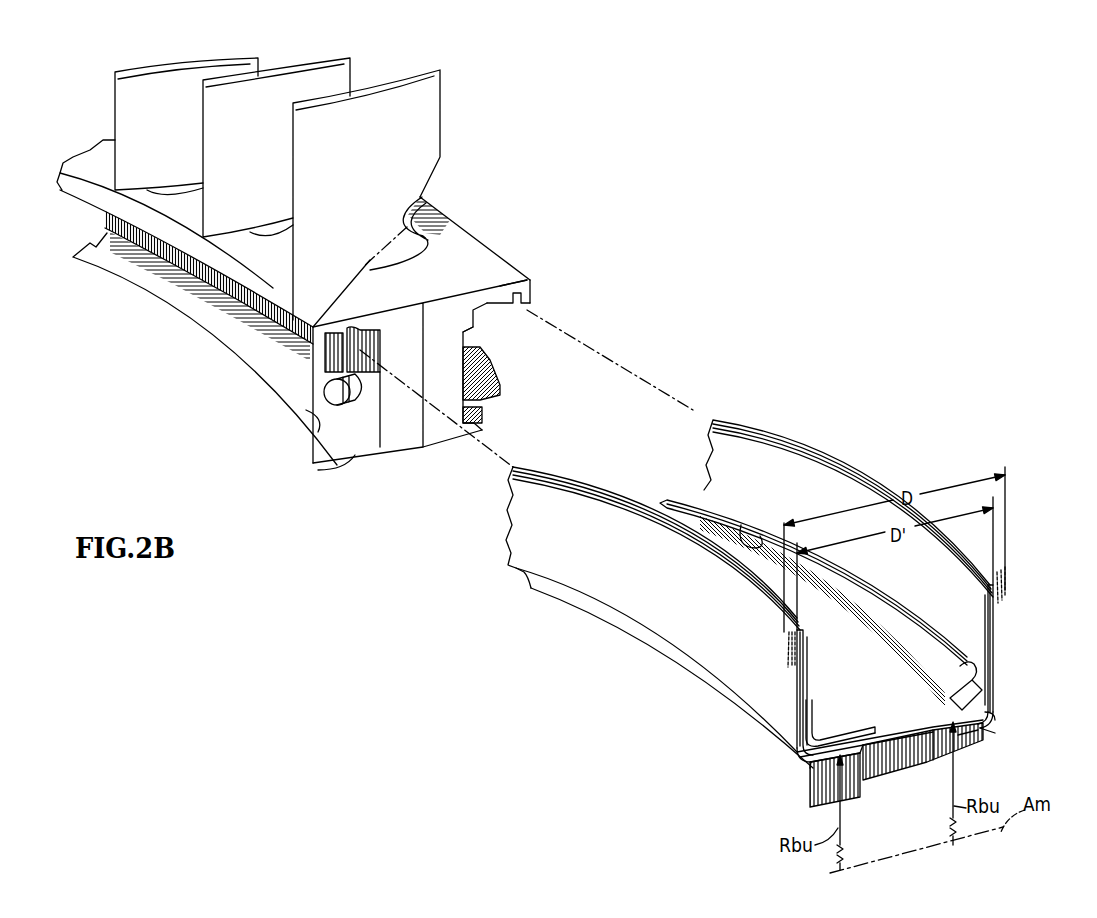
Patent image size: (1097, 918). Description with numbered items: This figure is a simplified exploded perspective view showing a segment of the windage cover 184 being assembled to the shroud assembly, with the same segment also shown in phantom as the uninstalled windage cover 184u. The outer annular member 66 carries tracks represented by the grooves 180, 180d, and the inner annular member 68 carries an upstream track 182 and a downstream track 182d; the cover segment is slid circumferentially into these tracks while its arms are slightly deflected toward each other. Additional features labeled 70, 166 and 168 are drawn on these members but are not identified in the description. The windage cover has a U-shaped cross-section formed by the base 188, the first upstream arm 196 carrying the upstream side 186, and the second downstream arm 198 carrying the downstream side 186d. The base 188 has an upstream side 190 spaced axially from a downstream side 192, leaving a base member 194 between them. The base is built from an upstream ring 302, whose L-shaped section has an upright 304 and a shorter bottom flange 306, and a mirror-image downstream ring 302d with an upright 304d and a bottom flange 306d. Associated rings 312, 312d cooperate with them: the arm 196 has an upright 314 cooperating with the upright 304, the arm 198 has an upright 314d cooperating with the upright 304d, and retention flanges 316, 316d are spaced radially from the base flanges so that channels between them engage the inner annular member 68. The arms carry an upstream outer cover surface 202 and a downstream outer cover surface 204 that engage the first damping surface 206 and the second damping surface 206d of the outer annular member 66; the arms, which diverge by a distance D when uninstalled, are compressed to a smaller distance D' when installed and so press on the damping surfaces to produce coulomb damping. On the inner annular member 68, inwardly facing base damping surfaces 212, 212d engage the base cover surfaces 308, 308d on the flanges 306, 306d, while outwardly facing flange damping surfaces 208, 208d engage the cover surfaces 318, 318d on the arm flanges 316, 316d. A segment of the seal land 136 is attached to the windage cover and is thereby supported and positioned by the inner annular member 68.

The outer annular member 66 is at (100, 157).
The platform lower surface 70 is at (97, 195).
The inner annular member 68 is at (207, 333).
The first damping surface 206 is at (298, 356).
The fourth upstream flange damping surface 208 is at (306, 410).
The upstream track 182 is at (332, 445).
The rail 168 is at (342, 476).
The third upstream base damping surface 212 is at (360, 480).
The groove 180 is at (350, 347).
The rail block 166 is at (397, 322).
The downstream groove 180d is at (524, 279).
The second damping surface 206d is at (531, 298).
The fourth downstream flange damping surface 208d is at (490, 375).
The downstream track 182d is at (490, 378).
The third downstream base damping surface 212d is at (487, 410).
The windage cover 184 is at (490, 552).
The first upstream outer cover surface 202 is at (682, 552).
The second downstream outer cover surface 204 is at (817, 452).
The upstream arm 196 is at (620, 611).
The seal land 136 is at (681, 663).
The upright 304 is at (797, 684).
The uninstalled windage cover 184u is at (786, 650).
The upright 314 is at (806, 640).
The associated ring 312 is at (807, 694).
The upstream side 186 is at (808, 700).
The fourth upstream cover surface 318 is at (840, 748).
The upstream ring 302 is at (797, 715).
The upstream arm flange 316 is at (800, 735).
The third upstream base cover surface 308 is at (796, 757).
The upstream side of the base 190 is at (800, 770).
The bottom flange 306 is at (841, 760).
The base member 194 is at (888, 750).
The downstream bottom flange 306d is at (938, 757).
The third downstream base cover surface 308d is at (963, 742).
The downstream side of the base 192 is at (994, 714).
The base 188 is at (988, 730).
The downstream upright 304d is at (995, 634).
The downstream ring 302d is at (997, 684).
The downstream side 186d is at (986, 598).
The downstream associated ring 312d is at (985, 624).
The downstream upright 314d is at (968, 674).
The downstream arm 198 is at (880, 472).
The downstream arm flange 316d is at (713, 512).
The fourth downstream cover surface 318d is at (741, 538).